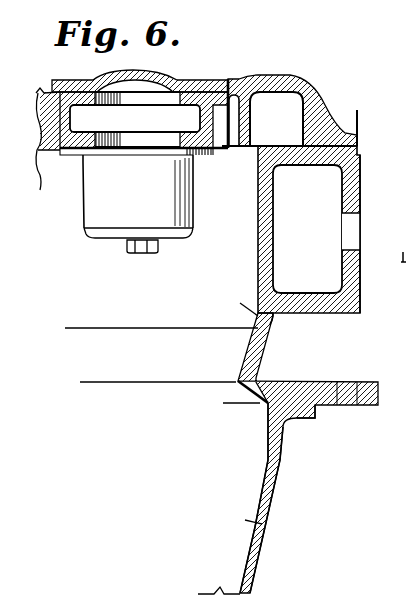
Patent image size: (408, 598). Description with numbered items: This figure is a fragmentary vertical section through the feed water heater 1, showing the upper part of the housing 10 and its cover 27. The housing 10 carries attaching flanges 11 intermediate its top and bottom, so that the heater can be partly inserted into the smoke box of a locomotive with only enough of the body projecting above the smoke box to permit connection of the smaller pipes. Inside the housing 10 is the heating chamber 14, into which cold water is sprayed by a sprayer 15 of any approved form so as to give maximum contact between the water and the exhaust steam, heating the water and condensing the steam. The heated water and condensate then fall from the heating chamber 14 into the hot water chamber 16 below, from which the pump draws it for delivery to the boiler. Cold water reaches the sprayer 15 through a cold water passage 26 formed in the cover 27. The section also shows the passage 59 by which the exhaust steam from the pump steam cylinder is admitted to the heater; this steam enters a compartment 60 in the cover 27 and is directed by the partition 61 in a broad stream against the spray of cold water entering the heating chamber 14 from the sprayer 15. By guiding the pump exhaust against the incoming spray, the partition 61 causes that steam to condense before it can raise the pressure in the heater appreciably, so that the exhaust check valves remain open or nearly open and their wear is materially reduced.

The feed water heater 1 is at (287, 489).
The housing 10 is at (258, 362).
The attaching flanges 11 is at (328, 406).
The heating chamber 14 is at (274, 321).
The sprayer 15 is at (170, 212).
The hot water chamber 16 is at (230, 523).
The cold water passage 26 is at (185, 115).
The cover 27 is at (310, 100).
The passage 59 is at (330, 186).
The compartment 60 is at (279, 106).
The partition 61 is at (241, 146).